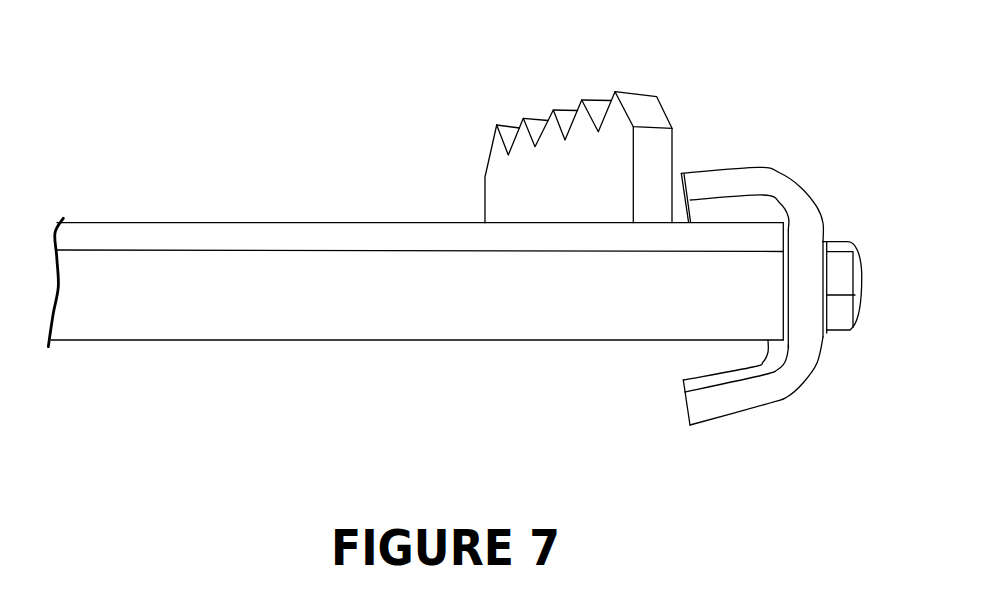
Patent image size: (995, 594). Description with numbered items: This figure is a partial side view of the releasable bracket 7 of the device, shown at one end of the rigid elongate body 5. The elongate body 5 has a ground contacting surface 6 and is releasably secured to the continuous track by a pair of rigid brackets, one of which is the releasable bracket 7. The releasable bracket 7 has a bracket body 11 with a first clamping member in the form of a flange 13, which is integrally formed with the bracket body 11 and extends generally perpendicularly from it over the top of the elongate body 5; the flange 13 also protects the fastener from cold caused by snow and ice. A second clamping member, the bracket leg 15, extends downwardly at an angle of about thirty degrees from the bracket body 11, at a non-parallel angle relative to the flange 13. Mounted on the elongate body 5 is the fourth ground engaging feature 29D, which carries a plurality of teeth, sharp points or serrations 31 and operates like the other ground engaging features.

The elongate body 5 is at (180, 267).
The ground contacting surface 6 is at (347, 222).
The fourth ground engaging feature 29D is at (526, 119).
The serrations 31 is at (616, 92).
The releasable bracket 7 is at (780, 289).
The flange 13 is at (755, 177).
The bracket body 11 is at (810, 333).
The bracket leg 15 is at (715, 412).